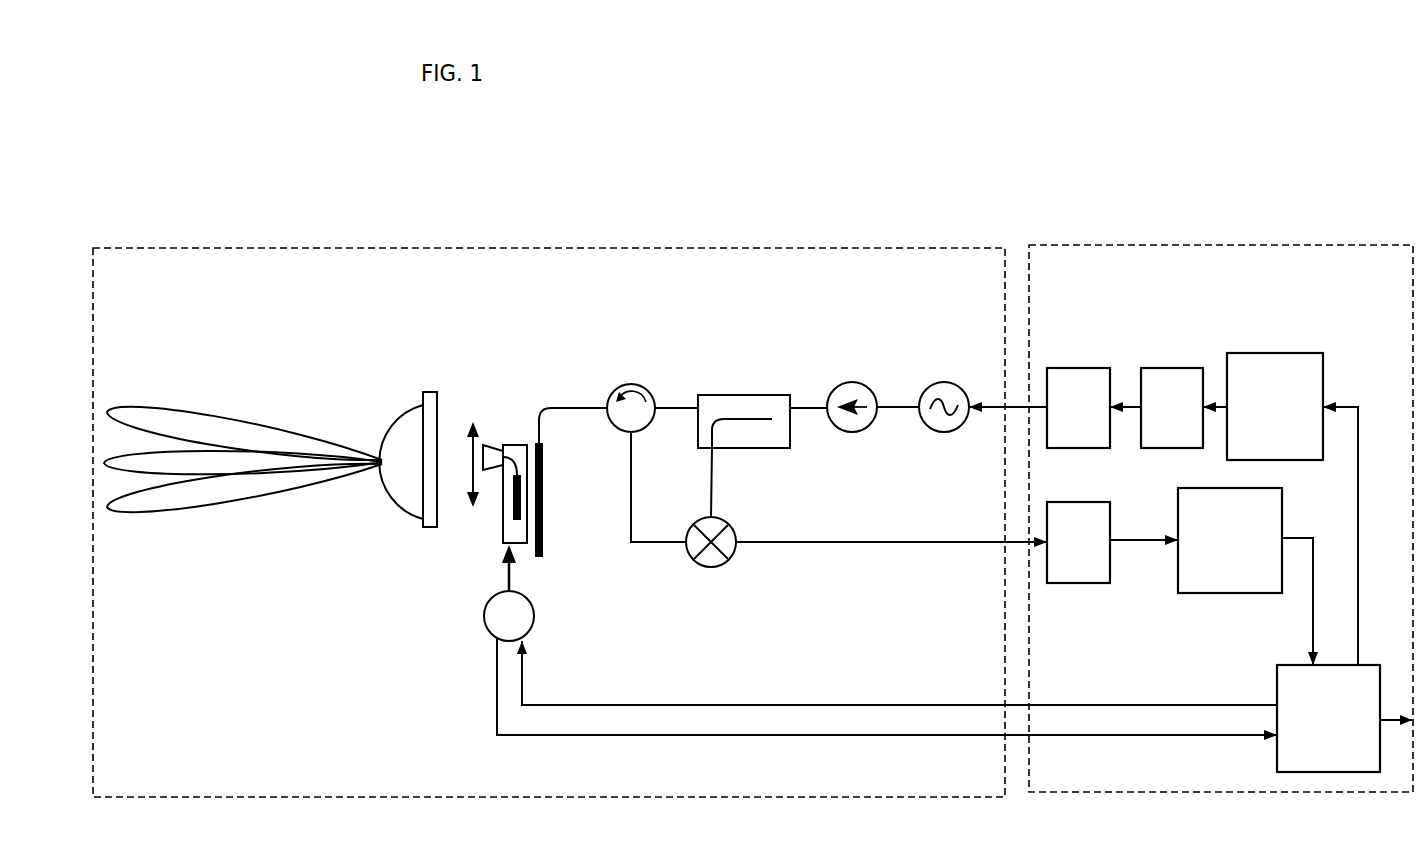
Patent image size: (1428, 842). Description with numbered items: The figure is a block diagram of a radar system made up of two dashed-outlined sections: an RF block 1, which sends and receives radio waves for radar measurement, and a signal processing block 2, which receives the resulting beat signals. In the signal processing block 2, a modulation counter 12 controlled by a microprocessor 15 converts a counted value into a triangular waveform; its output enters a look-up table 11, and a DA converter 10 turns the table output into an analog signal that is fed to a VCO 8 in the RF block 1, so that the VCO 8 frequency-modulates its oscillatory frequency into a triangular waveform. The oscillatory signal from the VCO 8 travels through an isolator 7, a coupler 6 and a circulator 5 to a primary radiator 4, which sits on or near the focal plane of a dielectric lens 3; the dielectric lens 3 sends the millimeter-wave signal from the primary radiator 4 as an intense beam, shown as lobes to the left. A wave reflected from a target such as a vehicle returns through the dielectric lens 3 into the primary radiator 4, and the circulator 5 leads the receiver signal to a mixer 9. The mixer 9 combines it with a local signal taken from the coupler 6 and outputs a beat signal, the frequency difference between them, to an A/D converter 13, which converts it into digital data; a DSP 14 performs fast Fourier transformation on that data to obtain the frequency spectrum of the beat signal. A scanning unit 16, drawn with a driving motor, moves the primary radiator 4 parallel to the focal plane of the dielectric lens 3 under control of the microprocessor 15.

The RF block 1 is at (672, 247).
The signal processing block 2 is at (1228, 243).
The dielectric lens 3 is at (396, 405).
The primary radiator 4 is at (513, 436).
The circulator 5 is at (628, 384).
The coupler 6 is at (765, 395).
The isolator 7 is at (862, 383).
The VCO 8 is at (942, 383).
The mixer 9 is at (729, 560).
The DA converter 10 is at (1098, 368).
The look-up table 11 is at (1192, 368).
The modulation counter 12 is at (1280, 353).
The A/D converter 13 is at (1070, 583).
The DSP 14 is at (1185, 593).
The microprocessor 15 is at (1380, 665).
The scanning unit 16 is at (466, 620).